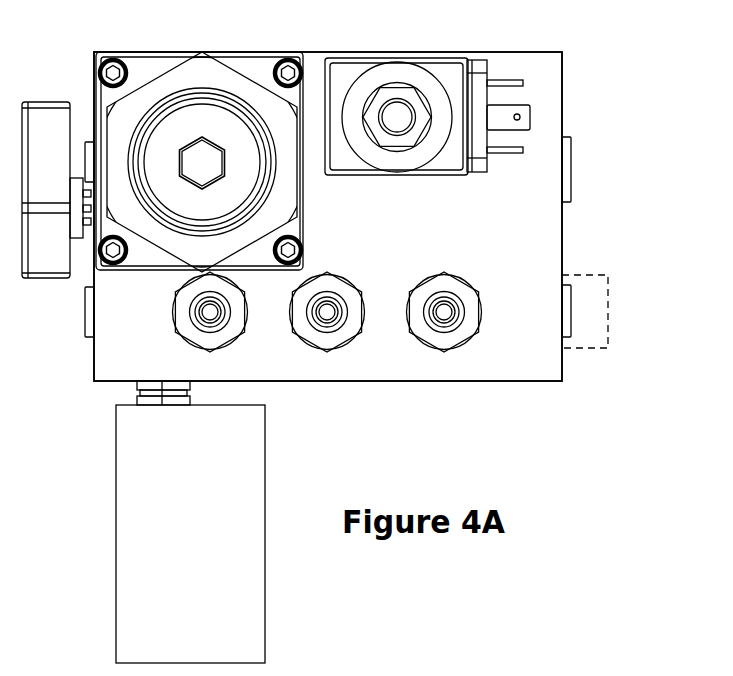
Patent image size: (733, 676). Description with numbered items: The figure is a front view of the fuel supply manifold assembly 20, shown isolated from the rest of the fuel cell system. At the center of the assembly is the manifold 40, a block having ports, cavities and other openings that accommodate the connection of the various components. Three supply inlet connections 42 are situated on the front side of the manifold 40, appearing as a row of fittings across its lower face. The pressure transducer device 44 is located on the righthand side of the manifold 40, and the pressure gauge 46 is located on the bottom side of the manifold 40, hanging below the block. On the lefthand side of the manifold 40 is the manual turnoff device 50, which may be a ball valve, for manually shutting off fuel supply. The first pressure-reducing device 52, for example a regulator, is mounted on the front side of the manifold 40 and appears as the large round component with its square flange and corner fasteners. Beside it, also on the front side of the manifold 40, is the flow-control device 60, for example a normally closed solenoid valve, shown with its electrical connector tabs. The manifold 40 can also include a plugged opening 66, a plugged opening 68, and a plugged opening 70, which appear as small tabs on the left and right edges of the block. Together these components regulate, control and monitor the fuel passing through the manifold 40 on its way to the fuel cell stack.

The fuel supply manifold assembly 20 is at (595, 119).
The manifold 40 is at (537, 82).
The supply inlet connections 42 is at (342, 292).
The pressure transducer device 44 is at (608, 310).
The pressure gauge 46 is at (203, 475).
The manual turnoff device 50 is at (42, 260).
The first pressure-reducing device 52 is at (277, 203).
The flow-control device 60 is at (443, 80).
The plugged opening 66 is at (88, 312).
The plugged opening 68 is at (90, 158).
The plugged opening 70 is at (568, 178).